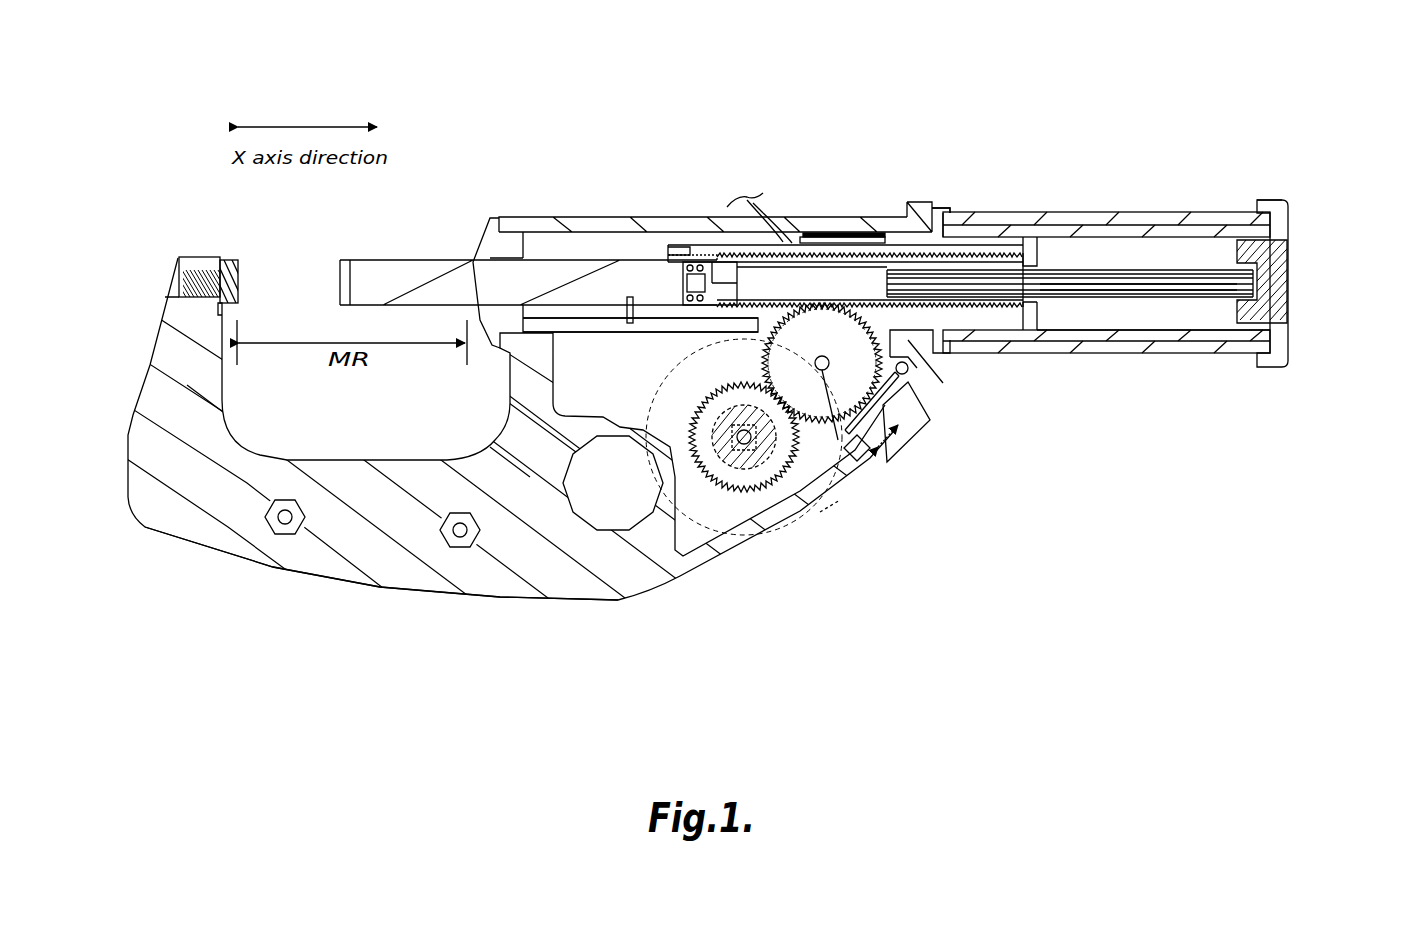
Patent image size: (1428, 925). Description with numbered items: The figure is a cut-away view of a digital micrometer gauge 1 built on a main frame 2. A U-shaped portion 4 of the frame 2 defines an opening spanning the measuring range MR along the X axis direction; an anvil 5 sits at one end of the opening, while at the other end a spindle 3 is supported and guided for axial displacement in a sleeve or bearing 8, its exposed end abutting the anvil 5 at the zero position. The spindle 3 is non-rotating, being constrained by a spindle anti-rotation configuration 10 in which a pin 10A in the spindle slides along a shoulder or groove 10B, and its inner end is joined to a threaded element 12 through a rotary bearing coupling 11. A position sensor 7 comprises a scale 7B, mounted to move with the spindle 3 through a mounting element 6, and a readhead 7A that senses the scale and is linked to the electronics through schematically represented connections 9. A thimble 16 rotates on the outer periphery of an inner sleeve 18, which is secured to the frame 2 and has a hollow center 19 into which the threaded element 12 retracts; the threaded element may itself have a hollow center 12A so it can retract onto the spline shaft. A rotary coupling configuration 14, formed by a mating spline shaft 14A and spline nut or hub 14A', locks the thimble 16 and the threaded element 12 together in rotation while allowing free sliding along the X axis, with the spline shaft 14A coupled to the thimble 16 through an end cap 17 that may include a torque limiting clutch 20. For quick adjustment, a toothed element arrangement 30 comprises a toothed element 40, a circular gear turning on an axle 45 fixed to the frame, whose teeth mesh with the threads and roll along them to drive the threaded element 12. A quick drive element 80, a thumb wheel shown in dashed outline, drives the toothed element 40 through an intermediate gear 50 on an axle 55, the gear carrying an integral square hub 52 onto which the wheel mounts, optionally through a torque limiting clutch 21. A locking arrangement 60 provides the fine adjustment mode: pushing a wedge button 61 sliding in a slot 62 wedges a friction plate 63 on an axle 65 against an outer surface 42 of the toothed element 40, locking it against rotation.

The digital micrometer gauge 1 is at (895, 80).
The main frame 2 is at (630, 605).
The spindle 3 is at (442, 258).
The U-shaped portion 4 is at (405, 572).
The anvil 5 is at (240, 257).
The mounting element 6 is at (670, 255).
The position sensor 7 is at (824, 188).
The readhead 7A is at (840, 243).
The scale 7B is at (868, 235).
The sleeve or bearing 8 is at (492, 243).
The connections 9 is at (745, 203).
The spindle anti-rotation configuration 10 is at (769, 227).
The pin 10A is at (634, 275).
The shoulder or groove 10B is at (597, 330).
The rotary bearing coupling 11 is at (718, 262).
The threaded element 12 is at (944, 248).
The hollow center 12A is at (948, 352).
The rotary coupling configuration 14 is at (1070, 368).
The spline shaft 14A is at (1138, 362).
The spline nut or hub 14A' is at (1133, 375).
The thimble 16 is at (1030, 213).
The end cap 17 is at (1288, 222).
The inner sleeve 18 is at (1132, 338).
The hollow center 19 is at (1090, 243).
The torque limiting clutch 20 is at (1285, 265).
The torque limiting clutch 21 is at (740, 457).
The toothed element arrangement 30 is at (869, 465).
The toothed element 40 is at (828, 475).
The outer surface 42 is at (853, 468).
The axle 45 is at (833, 470).
The intermediate gear 50 is at (747, 445).
The square hub 52 is at (787, 482).
The axle 55 is at (740, 482).
The locking arrangement 60 is at (932, 408).
The wedge button 61 is at (972, 402).
The slot 62 is at (913, 422).
The friction plate 63 is at (908, 392).
The axle 65 is at (908, 377).
The quick drive element 80 is at (816, 510).